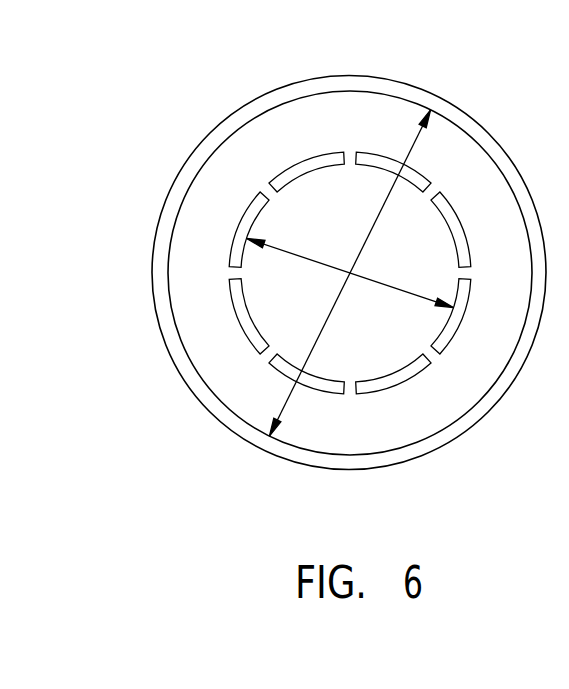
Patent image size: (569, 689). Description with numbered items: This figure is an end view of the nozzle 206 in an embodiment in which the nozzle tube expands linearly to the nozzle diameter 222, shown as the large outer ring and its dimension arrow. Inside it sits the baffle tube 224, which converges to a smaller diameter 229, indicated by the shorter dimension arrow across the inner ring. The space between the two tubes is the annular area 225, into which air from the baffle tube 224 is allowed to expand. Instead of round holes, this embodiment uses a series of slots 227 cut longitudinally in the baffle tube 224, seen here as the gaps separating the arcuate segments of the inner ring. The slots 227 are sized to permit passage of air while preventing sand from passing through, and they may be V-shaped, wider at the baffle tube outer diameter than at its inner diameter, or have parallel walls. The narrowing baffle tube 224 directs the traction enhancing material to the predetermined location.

The nozzle 206 is at (405, 86).
The annular area 225 is at (470, 395).
The nozzle diameter 222 is at (371, 231).
The smaller diameter 229 is at (322, 264).
The baffle tube 224 is at (239, 318).
The slots 227 is at (268, 361).